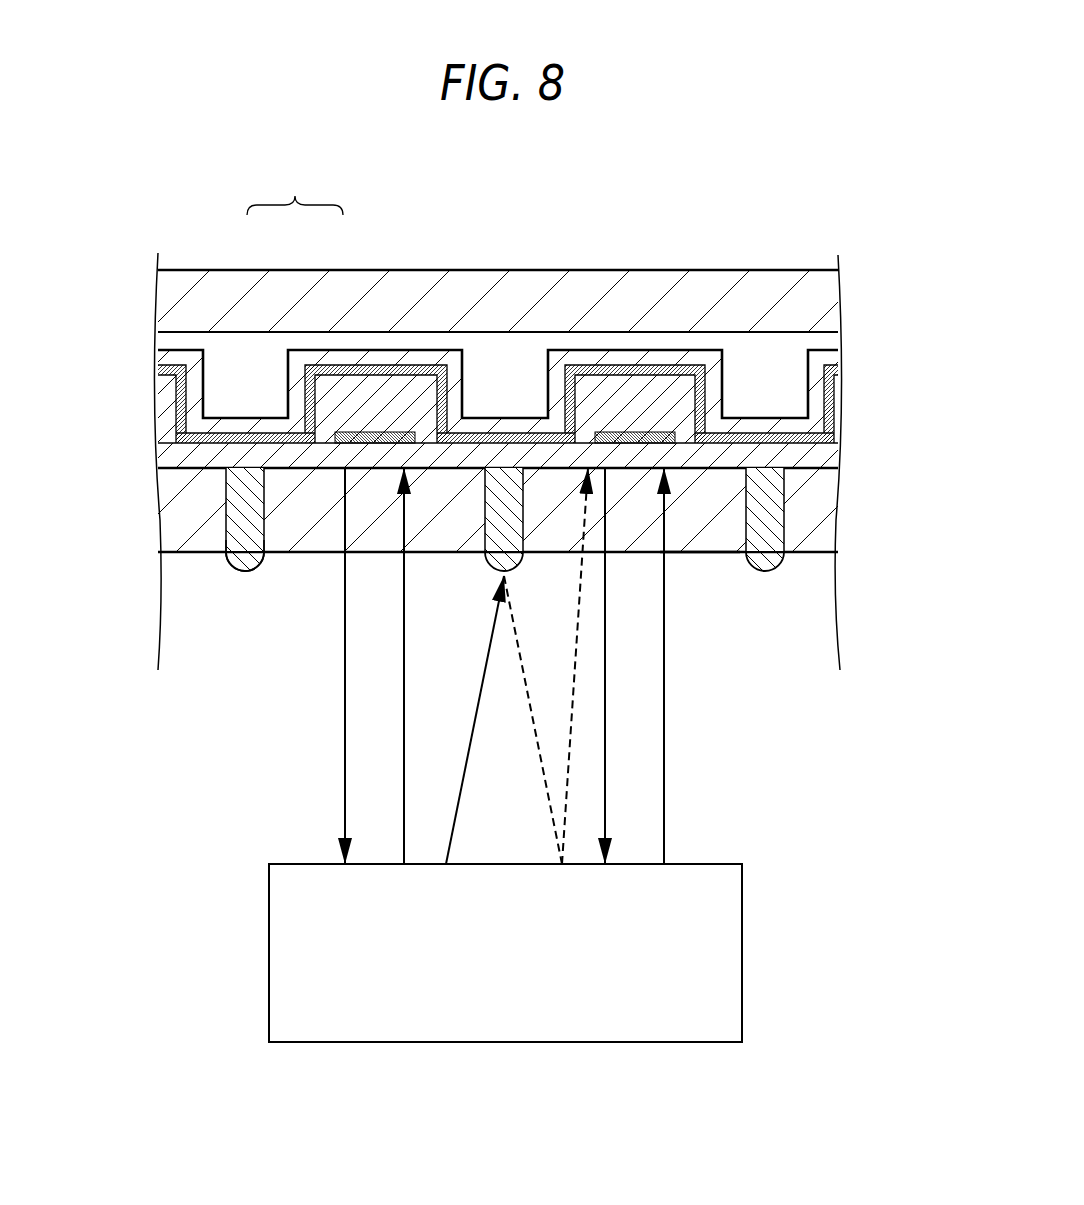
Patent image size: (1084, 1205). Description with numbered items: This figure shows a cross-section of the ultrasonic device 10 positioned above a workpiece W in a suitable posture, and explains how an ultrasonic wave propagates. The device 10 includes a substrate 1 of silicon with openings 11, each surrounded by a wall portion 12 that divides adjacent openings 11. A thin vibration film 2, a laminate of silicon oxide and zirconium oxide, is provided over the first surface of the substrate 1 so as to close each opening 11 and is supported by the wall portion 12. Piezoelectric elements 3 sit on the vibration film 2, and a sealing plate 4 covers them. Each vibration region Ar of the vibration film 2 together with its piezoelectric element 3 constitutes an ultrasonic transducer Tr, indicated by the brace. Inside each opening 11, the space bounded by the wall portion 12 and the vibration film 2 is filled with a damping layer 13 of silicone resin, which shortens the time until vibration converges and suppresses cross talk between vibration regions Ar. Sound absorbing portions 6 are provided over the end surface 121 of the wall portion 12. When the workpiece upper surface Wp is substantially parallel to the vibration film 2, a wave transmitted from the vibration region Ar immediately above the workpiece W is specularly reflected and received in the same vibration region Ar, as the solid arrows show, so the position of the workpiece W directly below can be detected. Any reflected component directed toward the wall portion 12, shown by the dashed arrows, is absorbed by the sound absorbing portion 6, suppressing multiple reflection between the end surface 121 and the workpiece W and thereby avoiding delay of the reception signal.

The ultrasonic device 10 is at (499, 416).
The ultrasonic transducer Tr is at (295, 189).
The vibration region Ar is at (287, 467).
The piezoelectric element 3 is at (340, 362).
The sealing plate 4 is at (779, 290).
The vibration film 2 is at (812, 461).
The substrate 1 is at (773, 511).
The opening 11 is at (265, 526).
The wall portion 12 is at (230, 546).
The end surface 121 is at (233, 568).
The sound absorbing portion 6 is at (247, 576).
The damping layer 13 is at (704, 553).
The workpiece upper surface Wp is at (705, 864).
The workpiece W is at (711, 955).